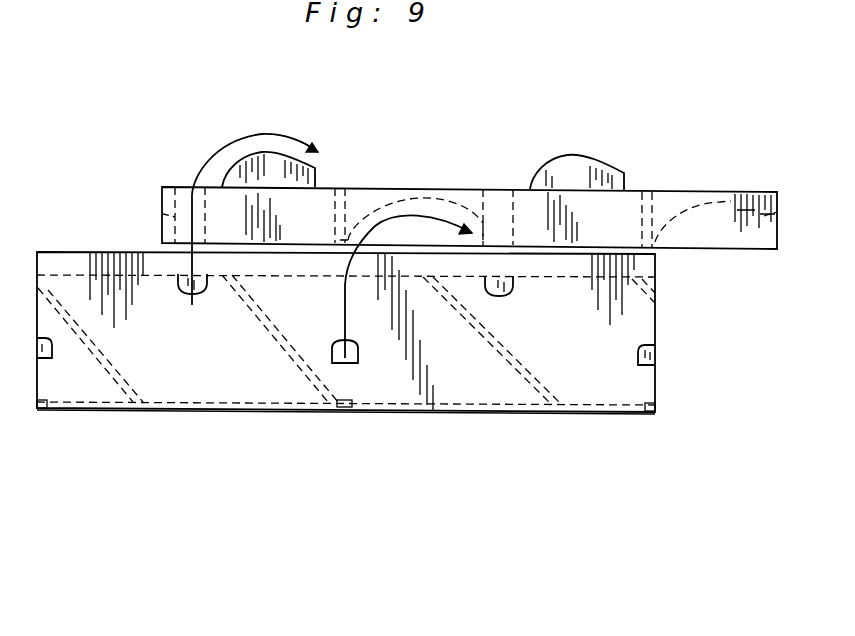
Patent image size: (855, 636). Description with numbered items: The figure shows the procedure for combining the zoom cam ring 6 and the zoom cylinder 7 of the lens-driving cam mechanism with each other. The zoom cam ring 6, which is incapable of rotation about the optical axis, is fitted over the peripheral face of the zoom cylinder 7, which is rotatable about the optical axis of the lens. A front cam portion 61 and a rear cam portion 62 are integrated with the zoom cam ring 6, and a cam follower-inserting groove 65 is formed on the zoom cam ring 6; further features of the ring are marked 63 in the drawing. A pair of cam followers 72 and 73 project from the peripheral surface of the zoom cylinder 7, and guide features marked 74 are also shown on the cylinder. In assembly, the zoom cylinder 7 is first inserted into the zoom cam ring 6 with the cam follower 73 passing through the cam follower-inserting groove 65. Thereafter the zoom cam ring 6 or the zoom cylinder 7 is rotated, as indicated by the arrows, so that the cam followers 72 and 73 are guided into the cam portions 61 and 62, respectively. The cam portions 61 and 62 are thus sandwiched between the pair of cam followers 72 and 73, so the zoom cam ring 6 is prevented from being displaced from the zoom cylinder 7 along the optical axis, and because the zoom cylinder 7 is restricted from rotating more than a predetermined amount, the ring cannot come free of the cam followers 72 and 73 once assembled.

The zoom cam ring 6 is at (735, 251).
The zoom cylinder 7 is at (602, 416).
The front cam portion 61 is at (318, 168).
The rear cam portion 62 is at (440, 195).
The slot 63 is at (345, 187).
The cam follower-inserting groove 65 is at (182, 197).
The cam follower 72 is at (207, 293).
The cam follower 73 is at (655, 355).
The guide groove 74 is at (127, 385).